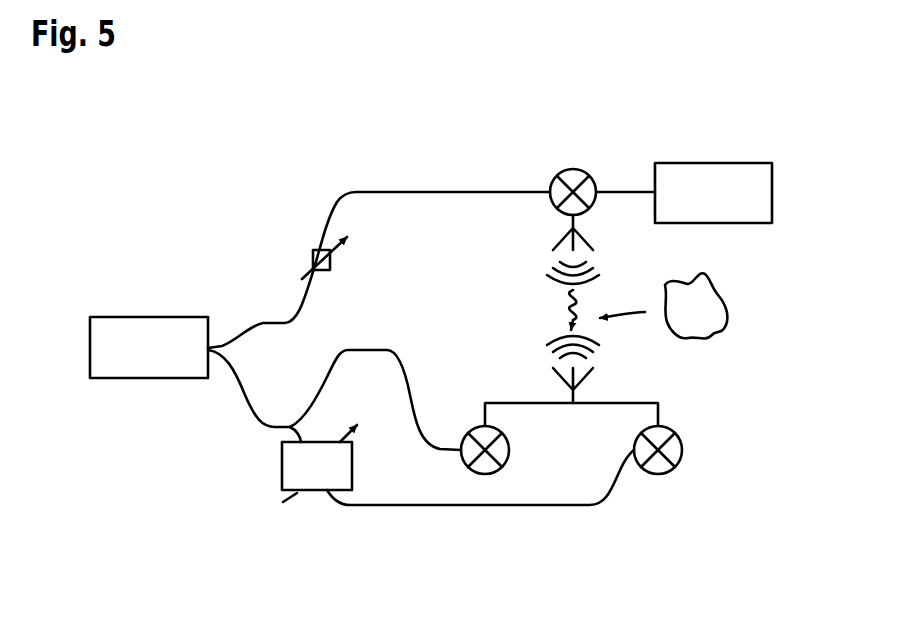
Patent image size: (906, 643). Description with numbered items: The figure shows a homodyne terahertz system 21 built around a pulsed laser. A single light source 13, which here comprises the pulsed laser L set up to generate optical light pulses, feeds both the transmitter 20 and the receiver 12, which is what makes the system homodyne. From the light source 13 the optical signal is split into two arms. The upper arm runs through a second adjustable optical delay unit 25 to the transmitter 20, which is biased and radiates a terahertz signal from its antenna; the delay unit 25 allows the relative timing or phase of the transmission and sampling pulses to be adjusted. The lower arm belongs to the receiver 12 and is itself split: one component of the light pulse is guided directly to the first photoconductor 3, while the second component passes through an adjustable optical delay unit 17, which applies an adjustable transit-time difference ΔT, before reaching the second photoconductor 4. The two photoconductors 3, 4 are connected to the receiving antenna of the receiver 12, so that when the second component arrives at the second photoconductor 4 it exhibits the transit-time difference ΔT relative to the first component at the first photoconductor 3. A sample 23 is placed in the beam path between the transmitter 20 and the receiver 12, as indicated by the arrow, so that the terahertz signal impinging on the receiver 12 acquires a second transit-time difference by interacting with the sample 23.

The terahertz system 21 is at (145, 150).
The transmitter 20 is at (518, 135).
The light source 13 is at (140, 390).
The second adjustable optical delay unit 25 is at (330, 264).
The receiver 12 is at (247, 508).
The adjustable optical delay unit 17 is at (312, 490).
The first photoconductor 3 is at (470, 425).
The second photoconductor 4 is at (676, 430).
The sample 23 is at (713, 303).